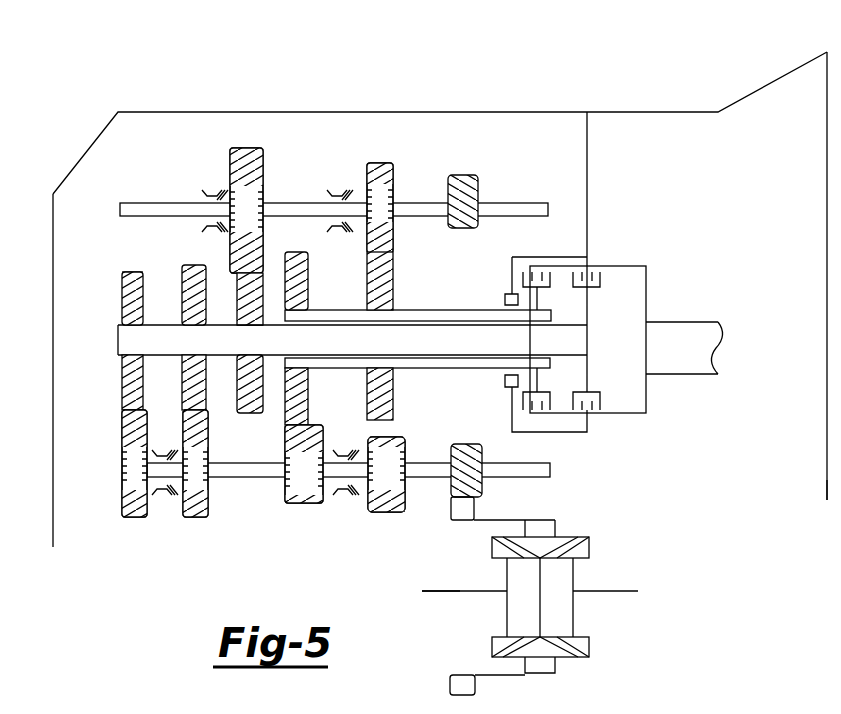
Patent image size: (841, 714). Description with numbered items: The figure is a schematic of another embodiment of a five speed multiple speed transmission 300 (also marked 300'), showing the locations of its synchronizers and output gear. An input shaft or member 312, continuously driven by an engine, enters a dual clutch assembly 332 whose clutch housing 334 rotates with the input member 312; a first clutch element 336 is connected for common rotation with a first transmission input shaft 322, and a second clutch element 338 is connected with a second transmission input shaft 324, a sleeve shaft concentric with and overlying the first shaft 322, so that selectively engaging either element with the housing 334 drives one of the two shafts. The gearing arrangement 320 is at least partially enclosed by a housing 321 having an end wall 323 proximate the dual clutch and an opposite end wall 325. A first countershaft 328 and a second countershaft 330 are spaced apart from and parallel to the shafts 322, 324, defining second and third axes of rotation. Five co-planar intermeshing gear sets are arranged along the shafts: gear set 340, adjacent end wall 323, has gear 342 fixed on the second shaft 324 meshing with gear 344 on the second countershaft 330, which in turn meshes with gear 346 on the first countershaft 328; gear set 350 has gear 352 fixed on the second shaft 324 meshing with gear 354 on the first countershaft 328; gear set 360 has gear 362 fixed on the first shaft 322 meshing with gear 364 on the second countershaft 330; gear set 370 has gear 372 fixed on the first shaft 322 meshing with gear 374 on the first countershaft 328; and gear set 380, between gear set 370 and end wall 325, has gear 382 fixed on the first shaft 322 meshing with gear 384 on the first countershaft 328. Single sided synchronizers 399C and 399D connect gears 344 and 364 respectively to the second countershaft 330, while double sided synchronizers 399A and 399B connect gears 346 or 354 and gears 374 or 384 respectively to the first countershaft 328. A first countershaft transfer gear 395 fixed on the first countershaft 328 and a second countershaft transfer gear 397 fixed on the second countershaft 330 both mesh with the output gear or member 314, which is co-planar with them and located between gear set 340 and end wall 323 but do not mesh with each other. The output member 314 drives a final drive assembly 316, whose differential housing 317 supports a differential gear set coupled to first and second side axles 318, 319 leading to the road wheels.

The multiple speed transmission 300 is at (440, 108).
The alternate transmission 300' is at (788, 596).
The input shaft 312 is at (682, 322).
The output gear 314 is at (470, 510).
The final drive assembly 316 is at (620, 543).
The differential housing 317 is at (540, 670).
The first side axle 318 is at (618, 591).
The second side axle 319 is at (447, 592).
The gearing arrangement 320 is at (130, 157).
The housing 321 is at (687, 112).
The first transmission input shaft 322 is at (567, 325).
The end wall 323 is at (588, 203).
The second transmission input shaft 324 is at (470, 308).
The end wall 325 is at (53, 222).
The first countershaft 328 is at (570, 477).
The second countershaft 330 is at (527, 205).
The dual clutch assembly 332 is at (692, 230).
The clutch housing 334 is at (646, 402).
The first clutch element 336 is at (587, 388).
The second clutch element 338 is at (537, 388).
The co-planar gear set 340 is at (393, 522).
The gear 342 is at (393, 288).
The gear 344 is at (380, 163).
The gear 346 is at (407, 460).
The co-planar gear set 350 is at (312, 508).
The gear 352 is at (310, 283).
The gear 354 is at (310, 424).
The co-planar gear set 360 is at (260, 426).
The gear 362 is at (252, 406).
The gear 364 is at (262, 172).
The co-planar gear set 370 is at (202, 525).
The gear 372 is at (182, 277).
The gear 374 is at (197, 505).
The co-planar gear set 380 is at (128, 524).
The gear 382 is at (122, 287).
The gear 384 is at (130, 440).
The first countershaft transfer gear 395 is at (465, 444).
The second countershaft transfer gear 397 is at (462, 174).
The synchronizer assembly 399A is at (348, 504).
The synchronizer assembly 399B is at (163, 500).
The synchronizer assembly 399C is at (335, 168).
The synchronizer assembly 399D is at (213, 172).